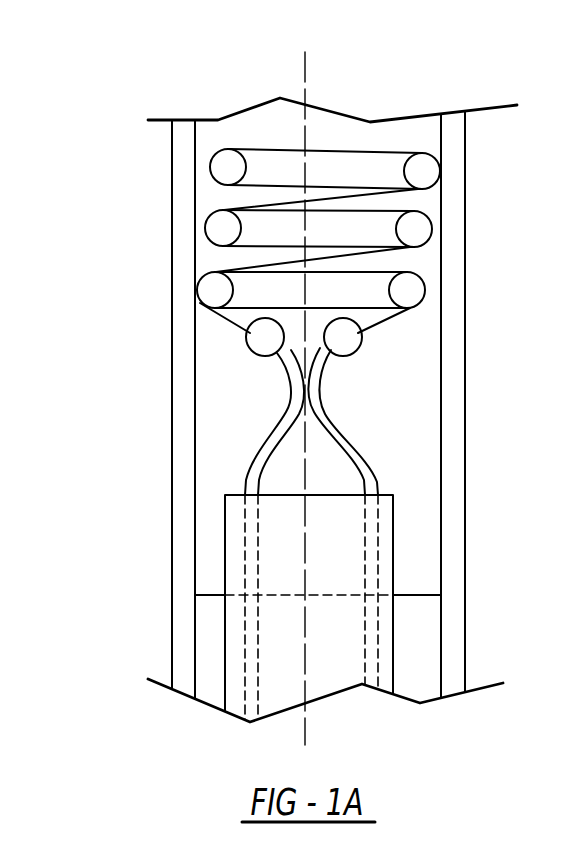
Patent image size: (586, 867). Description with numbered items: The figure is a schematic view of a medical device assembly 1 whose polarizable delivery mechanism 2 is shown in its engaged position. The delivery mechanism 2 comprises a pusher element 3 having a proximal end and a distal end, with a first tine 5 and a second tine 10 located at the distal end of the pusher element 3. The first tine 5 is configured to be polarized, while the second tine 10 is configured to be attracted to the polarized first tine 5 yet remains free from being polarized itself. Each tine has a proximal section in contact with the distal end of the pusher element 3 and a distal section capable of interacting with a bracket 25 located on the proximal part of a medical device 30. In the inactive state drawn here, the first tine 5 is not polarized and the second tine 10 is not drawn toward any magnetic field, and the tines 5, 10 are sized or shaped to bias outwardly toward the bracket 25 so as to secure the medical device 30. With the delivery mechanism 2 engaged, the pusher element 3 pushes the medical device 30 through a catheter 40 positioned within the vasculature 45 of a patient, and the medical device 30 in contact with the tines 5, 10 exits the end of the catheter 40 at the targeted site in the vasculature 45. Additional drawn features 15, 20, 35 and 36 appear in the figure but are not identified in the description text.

The medical device assembly 1 is at (124, 236).
The polarizable delivery mechanism 2 is at (110, 290).
The pusher element 3 is at (385, 530).
The first tine 5 is at (273, 422).
The second tine 10 is at (325, 408).
The bent portion of contact arm 15 is at (368, 455).
The first contact ball 20 is at (262, 342).
The bracket 25 is at (375, 322).
The medical device 30 is at (353, 165).
The first passage 35 is at (257, 650).
The second passage 36 is at (377, 623).
The catheter 40 is at (418, 668).
The vasculature 45 is at (465, 183).